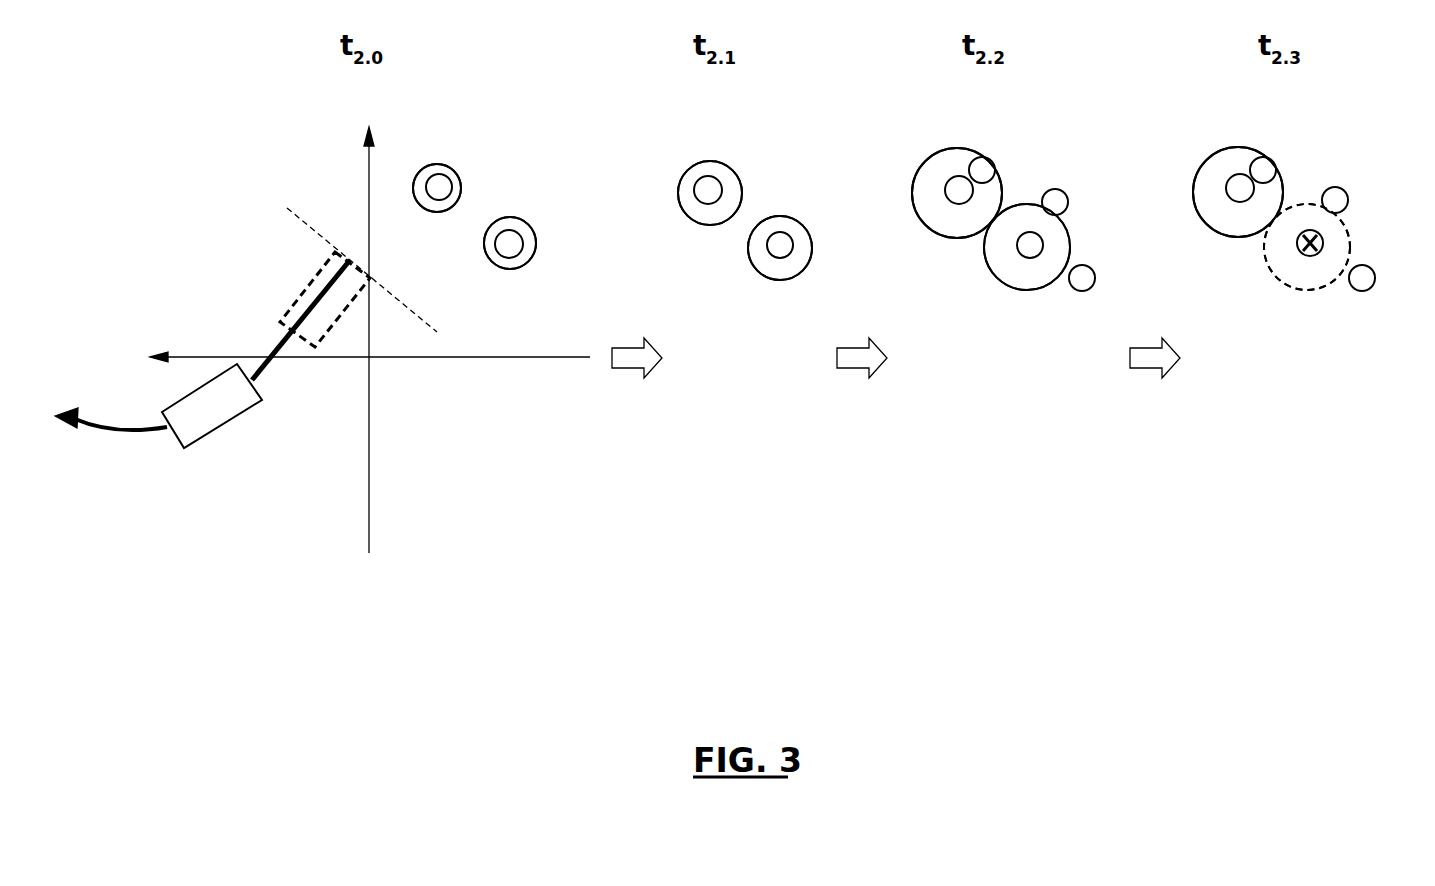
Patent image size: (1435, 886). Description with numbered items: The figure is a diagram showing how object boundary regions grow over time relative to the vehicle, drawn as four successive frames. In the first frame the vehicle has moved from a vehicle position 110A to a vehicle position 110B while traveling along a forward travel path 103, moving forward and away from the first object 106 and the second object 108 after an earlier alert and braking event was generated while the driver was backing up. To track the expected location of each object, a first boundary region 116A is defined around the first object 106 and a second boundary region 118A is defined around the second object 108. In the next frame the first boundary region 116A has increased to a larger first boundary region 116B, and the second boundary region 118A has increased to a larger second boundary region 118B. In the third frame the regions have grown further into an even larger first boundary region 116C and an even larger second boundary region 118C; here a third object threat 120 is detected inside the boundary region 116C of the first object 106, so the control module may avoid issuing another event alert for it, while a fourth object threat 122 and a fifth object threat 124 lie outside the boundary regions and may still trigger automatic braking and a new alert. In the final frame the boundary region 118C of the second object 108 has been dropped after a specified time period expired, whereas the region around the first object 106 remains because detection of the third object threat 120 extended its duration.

The forward travel path 103 is at (127, 425).
The first object 106 is at (430, 172).
The second object 108 is at (520, 247).
The vehicle position 110A is at (297, 300).
The vehicle position 110B is at (212, 432).
The first boundary region 116A is at (462, 180).
The larger first boundary region 116B is at (732, 168).
The even larger first boundary region 116C is at (965, 150).
The second boundary region 118A is at (510, 270).
The larger second boundary region 118B is at (780, 280).
The even larger second boundary region 118C is at (1022, 290).
The third object threat 120 is at (995, 170).
The fourth object threat 122 is at (1068, 197).
The fifth object threat 124 is at (1080, 292).